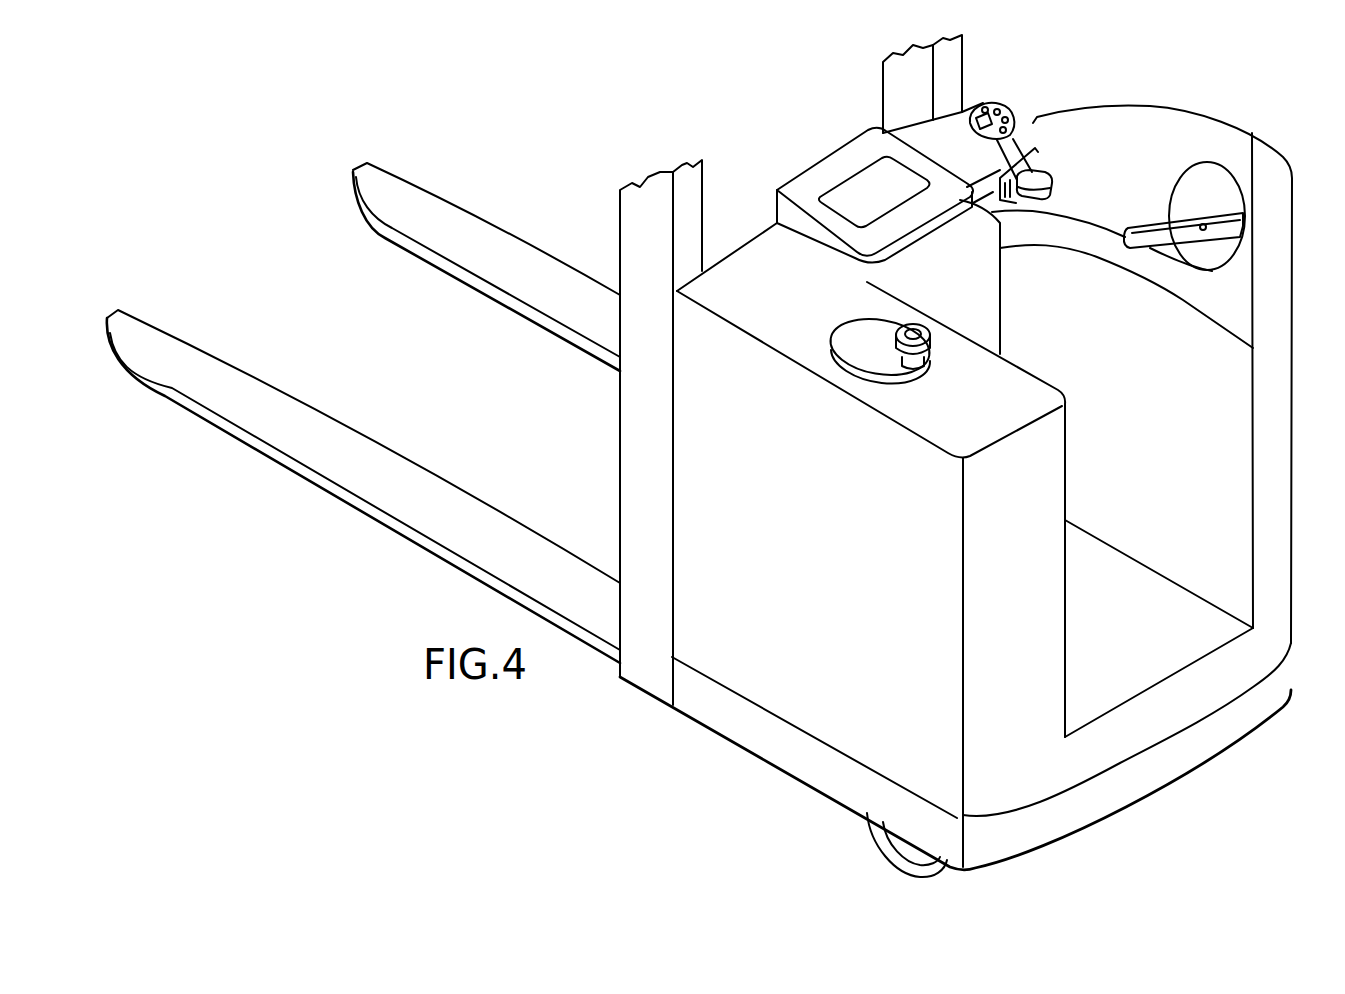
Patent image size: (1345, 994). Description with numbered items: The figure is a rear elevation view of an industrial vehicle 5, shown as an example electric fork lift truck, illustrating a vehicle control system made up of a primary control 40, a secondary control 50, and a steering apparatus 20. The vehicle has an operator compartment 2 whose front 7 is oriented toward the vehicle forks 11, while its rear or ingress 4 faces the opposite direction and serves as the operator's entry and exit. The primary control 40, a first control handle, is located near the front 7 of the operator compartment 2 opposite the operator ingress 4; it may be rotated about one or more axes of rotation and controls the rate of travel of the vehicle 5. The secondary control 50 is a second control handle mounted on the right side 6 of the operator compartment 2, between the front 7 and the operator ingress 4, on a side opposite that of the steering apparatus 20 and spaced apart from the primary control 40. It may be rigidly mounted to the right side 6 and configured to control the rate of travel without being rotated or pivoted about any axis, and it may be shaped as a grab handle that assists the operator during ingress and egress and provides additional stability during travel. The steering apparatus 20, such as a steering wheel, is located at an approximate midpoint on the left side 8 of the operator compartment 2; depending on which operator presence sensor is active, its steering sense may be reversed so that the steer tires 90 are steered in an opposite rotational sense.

The operator compartment 2 is at (1065, 273).
The rear or ingress 4 is at (1233, 527).
The industrial vehicle 5 is at (1238, 96).
The right side 6 is at (1153, 118).
The front 7 is at (832, 163).
The left side 8 is at (1012, 382).
The vehicle forks 11 is at (422, 177).
The steering apparatus 20 is at (830, 326).
The primary control 40 is at (1013, 106).
The secondary control 50 is at (1160, 213).
The steer tires 90 is at (893, 866).